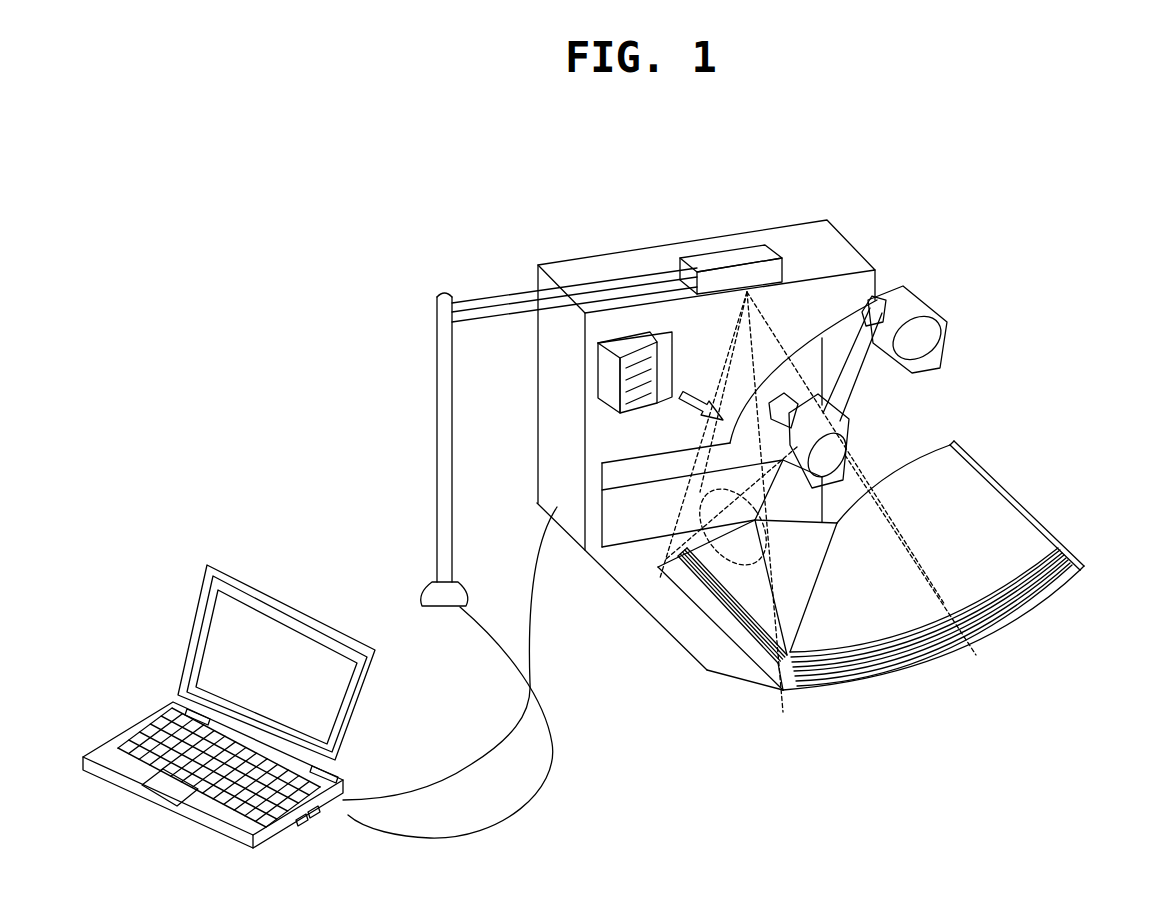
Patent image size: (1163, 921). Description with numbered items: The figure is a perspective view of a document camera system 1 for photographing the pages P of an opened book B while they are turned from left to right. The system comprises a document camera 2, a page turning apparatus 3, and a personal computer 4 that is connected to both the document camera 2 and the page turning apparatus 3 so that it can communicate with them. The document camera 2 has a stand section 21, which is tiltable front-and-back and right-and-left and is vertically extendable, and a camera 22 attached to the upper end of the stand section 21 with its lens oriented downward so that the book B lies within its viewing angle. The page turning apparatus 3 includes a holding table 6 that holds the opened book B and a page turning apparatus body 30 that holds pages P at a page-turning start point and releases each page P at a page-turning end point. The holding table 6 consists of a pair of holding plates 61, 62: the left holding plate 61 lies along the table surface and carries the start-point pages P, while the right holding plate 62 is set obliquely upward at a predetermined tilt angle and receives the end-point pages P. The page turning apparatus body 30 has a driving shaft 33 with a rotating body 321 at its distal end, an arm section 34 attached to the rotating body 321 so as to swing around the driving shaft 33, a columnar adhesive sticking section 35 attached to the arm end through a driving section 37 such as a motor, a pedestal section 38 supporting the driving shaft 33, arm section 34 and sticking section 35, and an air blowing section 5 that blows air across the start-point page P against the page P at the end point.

The document camera system 1 is at (573, 170).
The document camera 2 is at (410, 356).
The stand section 21 is at (437, 431).
The page turning apparatus body 30 is at (527, 274).
The camera 22 is at (742, 250).
The page turning apparatus 3 is at (846, 231).
The driving shaft 33 is at (787, 372).
The arm section 34 is at (857, 375).
The sticking section 35 is at (921, 313).
The driving section 37 is at (887, 307).
The rotating body 321 is at (834, 443).
The pedestal section 38 is at (835, 456).
The air blowing section 5 is at (600, 378).
The personal computer 4 is at (304, 601).
The pages P is at (955, 464).
The book B is at (1004, 495).
The holding table 6 is at (1072, 553).
The holding plate 61 is at (842, 682).
The holding plate 62 is at (1075, 580).